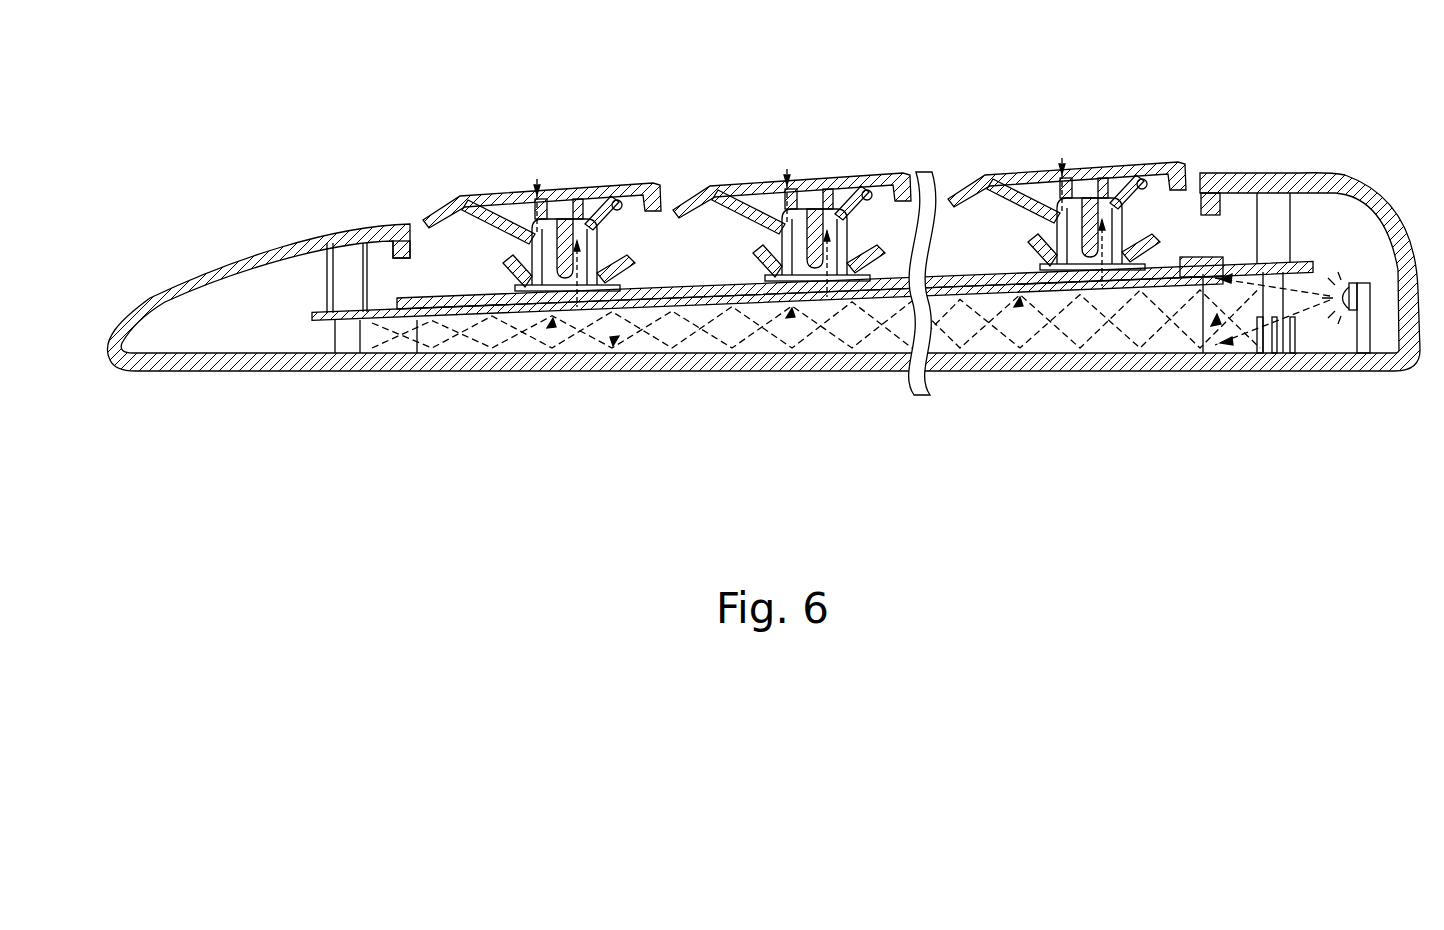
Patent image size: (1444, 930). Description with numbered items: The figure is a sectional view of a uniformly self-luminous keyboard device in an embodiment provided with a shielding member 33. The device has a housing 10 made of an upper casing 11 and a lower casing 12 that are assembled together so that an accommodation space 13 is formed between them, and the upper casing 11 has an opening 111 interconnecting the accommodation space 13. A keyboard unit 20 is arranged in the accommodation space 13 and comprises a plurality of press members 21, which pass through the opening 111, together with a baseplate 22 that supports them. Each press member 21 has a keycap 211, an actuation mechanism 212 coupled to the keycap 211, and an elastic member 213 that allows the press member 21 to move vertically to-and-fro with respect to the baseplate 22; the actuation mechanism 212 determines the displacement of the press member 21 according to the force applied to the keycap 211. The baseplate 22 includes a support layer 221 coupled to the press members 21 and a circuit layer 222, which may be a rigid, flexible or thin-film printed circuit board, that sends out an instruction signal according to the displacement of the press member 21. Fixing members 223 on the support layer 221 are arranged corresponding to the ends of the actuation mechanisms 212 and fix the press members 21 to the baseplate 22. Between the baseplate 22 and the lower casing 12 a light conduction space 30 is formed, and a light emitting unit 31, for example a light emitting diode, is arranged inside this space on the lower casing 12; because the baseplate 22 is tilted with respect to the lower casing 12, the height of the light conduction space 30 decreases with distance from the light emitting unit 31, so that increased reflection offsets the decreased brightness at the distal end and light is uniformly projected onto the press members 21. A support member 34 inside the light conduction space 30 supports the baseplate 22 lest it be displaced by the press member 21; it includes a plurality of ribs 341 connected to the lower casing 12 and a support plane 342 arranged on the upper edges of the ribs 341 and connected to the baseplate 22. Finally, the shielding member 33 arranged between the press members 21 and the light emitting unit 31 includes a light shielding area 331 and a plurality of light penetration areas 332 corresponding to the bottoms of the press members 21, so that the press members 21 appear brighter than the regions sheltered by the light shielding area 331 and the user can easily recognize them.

The housing 10 is at (763, 266).
The upper casing 11 is at (763, 287).
The lower casing 12 is at (763, 295).
The accommodation space 13 is at (203, 335).
The opening 111 is at (416, 250).
The keyboard unit 20 is at (856, 232).
The press member 21 is at (1067, 153).
The keycap 211 is at (1013, 165).
The actuation mechanism 212 is at (1123, 162).
The elastic member 213 is at (1068, 165).
The baseplate 22 is at (1227, 175).
The support layer 221 is at (1245, 265).
The circuit layer 222 is at (1211, 186).
The fixing member 223 is at (620, 310).
The light conduction space 30 is at (852, 359).
The light emitting unit 31 is at (1340, 300).
The shielding member 33 is at (812, 282).
The light shielding area 331 is at (733, 300).
The light penetration area 332 is at (820, 297).
The support member 34 is at (1212, 318).
The rib 341 is at (1057, 340).
The support plane 342 is at (1137, 285).